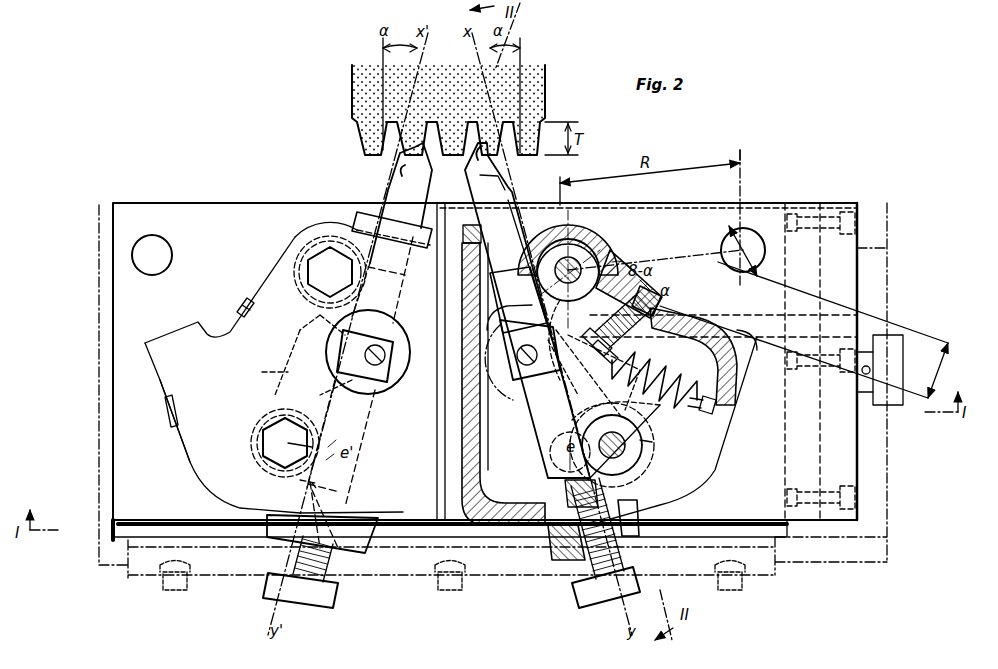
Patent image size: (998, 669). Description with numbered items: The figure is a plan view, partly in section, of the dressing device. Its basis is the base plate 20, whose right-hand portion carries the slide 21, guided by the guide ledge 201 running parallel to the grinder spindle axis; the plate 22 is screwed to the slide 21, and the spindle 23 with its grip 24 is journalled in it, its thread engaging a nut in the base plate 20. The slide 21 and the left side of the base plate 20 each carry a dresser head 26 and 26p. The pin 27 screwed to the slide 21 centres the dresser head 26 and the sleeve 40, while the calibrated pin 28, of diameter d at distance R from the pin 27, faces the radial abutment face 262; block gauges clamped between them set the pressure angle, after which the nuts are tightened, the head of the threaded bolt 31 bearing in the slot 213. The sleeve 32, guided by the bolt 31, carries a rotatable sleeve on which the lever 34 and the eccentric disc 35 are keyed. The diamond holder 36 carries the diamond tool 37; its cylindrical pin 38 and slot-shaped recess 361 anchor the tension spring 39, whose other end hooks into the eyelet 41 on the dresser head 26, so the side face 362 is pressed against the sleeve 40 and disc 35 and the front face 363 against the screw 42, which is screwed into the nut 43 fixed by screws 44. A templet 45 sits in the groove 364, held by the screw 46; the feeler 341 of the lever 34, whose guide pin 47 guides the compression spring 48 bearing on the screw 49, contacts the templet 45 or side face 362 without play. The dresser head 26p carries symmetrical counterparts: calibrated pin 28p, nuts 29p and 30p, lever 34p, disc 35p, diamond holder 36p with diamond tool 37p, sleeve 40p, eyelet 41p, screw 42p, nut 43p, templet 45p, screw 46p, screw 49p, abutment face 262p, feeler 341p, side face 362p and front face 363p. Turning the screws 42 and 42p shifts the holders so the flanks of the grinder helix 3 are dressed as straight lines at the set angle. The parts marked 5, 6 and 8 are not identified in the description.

The grinder helix 3 is at (545, 88).
The machine bed 5 is at (99, 498).
The base plate 6 is at (124, 566).
The fastening bolts 8 is at (170, 588).
The base plate 20 is at (232, 212).
The slide 21 is at (686, 205).
The plate 22 is at (855, 290).
The spindle 23 is at (503, 375).
The grip 24 is at (895, 340).
The dresser head 26 is at (728, 432).
The dresser head 26p is at (196, 464).
The pin 27 is at (598, 246).
The calibrated pin 28 is at (748, 236).
The calibrated pin 28p is at (172, 255).
The nut 29p is at (310, 278).
The nut 30p is at (262, 448).
The threaded bolt 31 is at (606, 425).
The sleeve 32 is at (652, 486).
The lever 34 is at (648, 440).
The lever 34p is at (268, 382).
The disc 35 is at (644, 455).
The disc 35p is at (258, 430).
The diamond holder 36 is at (506, 186).
The diamond holder 36p is at (388, 190).
The diamond tool 37 is at (491, 161).
The diamond tool 37p is at (403, 167).
The cylindrical pin 38 is at (534, 312).
The tension spring 39 is at (680, 392).
The sleeve 40 is at (580, 232).
The sleeve 40p is at (308, 244).
The eyelet 41 is at (738, 404).
The eyelet 41p is at (166, 410).
The screw 42 is at (598, 600).
The screw 42p is at (316, 606).
The nut 43 is at (556, 562).
The nut 43p is at (366, 558).
The screws 44 is at (632, 540).
The templet 45 is at (520, 392).
The templet 45p is at (392, 340).
The screw 46 is at (505, 340).
The screw 46p is at (390, 380).
The guide pin 47 is at (612, 352).
The compression spring 48 is at (631, 353).
The screw 49 is at (662, 308).
The screw 49p is at (246, 304).
The guide ledge 201 is at (787, 318).
The ⊥-shaped slot 213 is at (665, 447).
The abutment face 262 is at (750, 322).
The abutment face 262p is at (196, 328).
The feeler 341 is at (598, 372).
The feeler 341p is at (332, 326).
The slot-shaped recess 361 is at (576, 400).
The side face 362 is at (573, 415).
The side face 362p is at (330, 373).
The front face 363 is at (598, 485).
The front face 363p is at (308, 485).
The groove 364 is at (548, 400).